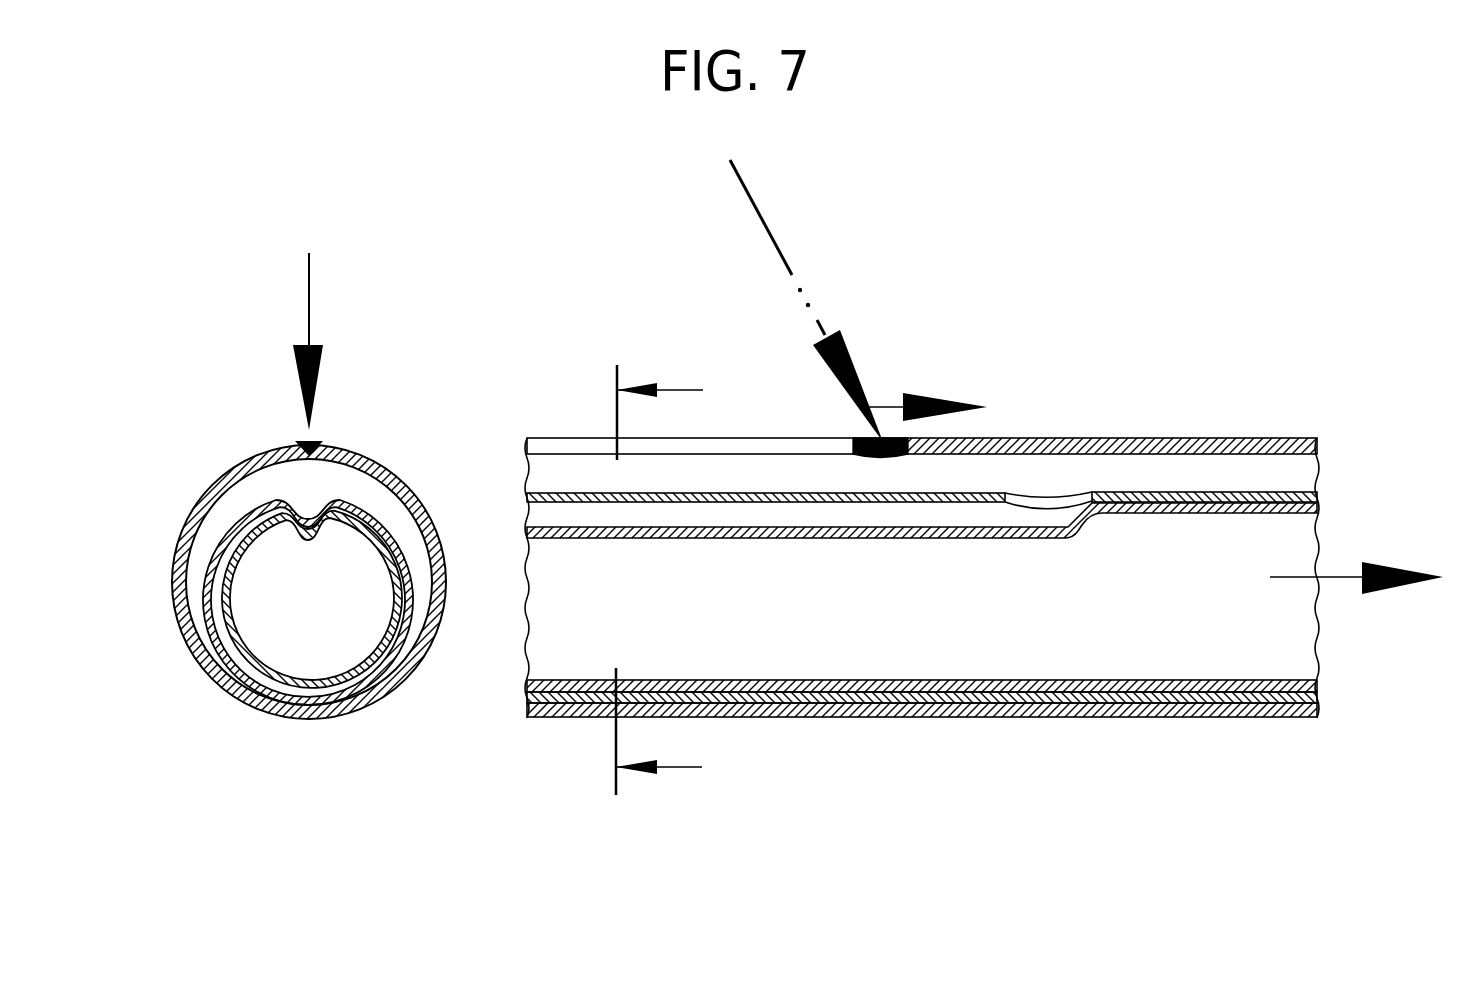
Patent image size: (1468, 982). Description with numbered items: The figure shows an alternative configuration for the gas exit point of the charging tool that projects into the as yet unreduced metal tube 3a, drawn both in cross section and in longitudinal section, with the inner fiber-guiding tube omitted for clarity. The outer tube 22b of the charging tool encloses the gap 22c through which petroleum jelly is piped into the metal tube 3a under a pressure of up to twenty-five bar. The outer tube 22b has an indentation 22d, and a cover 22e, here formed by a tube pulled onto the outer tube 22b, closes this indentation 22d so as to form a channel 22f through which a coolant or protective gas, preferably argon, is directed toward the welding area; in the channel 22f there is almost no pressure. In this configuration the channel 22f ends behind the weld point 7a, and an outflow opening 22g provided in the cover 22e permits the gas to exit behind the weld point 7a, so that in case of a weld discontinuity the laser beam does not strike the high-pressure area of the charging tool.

The metal tube 3a is at (373, 468).
The weld point 7a is at (889, 440).
The outer tube 22b is at (369, 659).
The gap 22c is at (262, 585).
The indentation 22d is at (317, 530).
The cover 22e is at (232, 665).
The channel 22f is at (300, 517).
The outflow opening 22g is at (1046, 500).